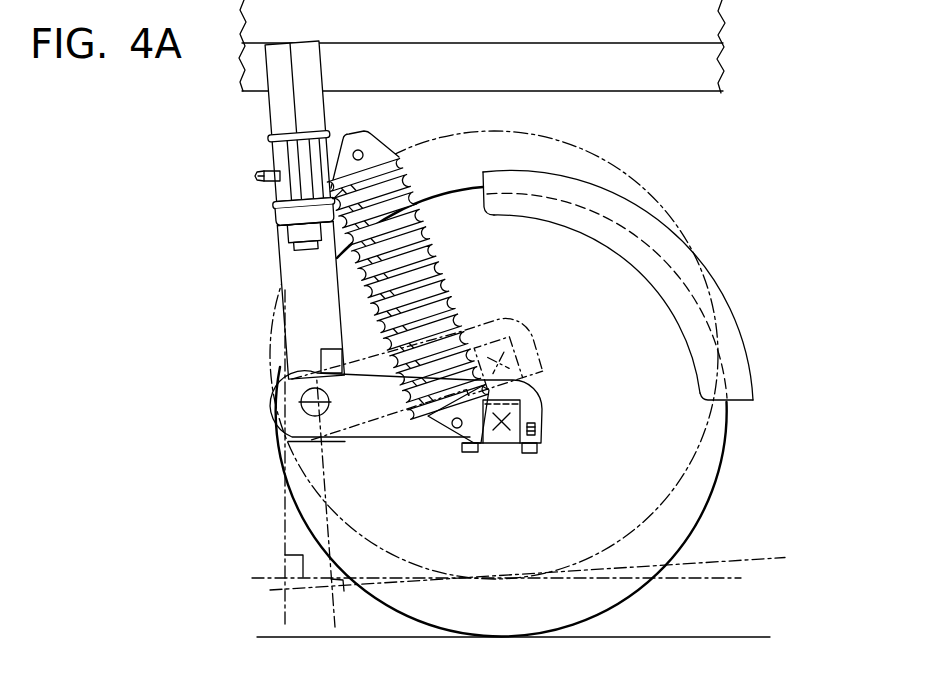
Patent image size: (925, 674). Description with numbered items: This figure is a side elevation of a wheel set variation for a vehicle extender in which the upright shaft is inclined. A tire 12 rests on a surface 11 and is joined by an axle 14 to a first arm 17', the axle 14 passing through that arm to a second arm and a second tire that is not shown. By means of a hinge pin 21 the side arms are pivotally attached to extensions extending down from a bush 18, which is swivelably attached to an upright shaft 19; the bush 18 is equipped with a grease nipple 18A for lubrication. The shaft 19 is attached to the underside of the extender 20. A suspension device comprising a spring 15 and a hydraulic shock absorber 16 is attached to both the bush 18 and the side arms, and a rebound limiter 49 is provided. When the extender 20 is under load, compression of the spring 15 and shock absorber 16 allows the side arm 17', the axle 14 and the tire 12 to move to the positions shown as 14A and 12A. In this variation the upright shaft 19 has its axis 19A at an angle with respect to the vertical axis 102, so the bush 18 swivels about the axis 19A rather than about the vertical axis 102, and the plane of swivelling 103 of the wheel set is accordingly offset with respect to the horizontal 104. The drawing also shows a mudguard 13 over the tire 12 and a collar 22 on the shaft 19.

The surface 11 is at (660, 648).
The tire 12 is at (702, 488).
The tire position 12A is at (611, 164).
The fender 13 is at (737, 373).
The axle 14 is at (501, 432).
The axle position 14A is at (513, 350).
The spring 15 is at (398, 159).
The hydraulic shock absorber 16 is at (388, 203).
The first arm 17' is at (536, 411).
The bush 18 is at (279, 152).
The grease nipple 18A is at (256, 176).
The upright shaft 19 is at (314, 67).
The axis of the shaft 19A is at (320, 481).
The extender 20 is at (607, 52).
The hinge pin 21 is at (327, 412).
The collar 22 is at (276, 209).
The rebound limiter 49 is at (323, 351).
The vertical axis 102 is at (284, 521).
The plane of swivelling 103 is at (313, 592).
The horizontal 104 is at (743, 578).